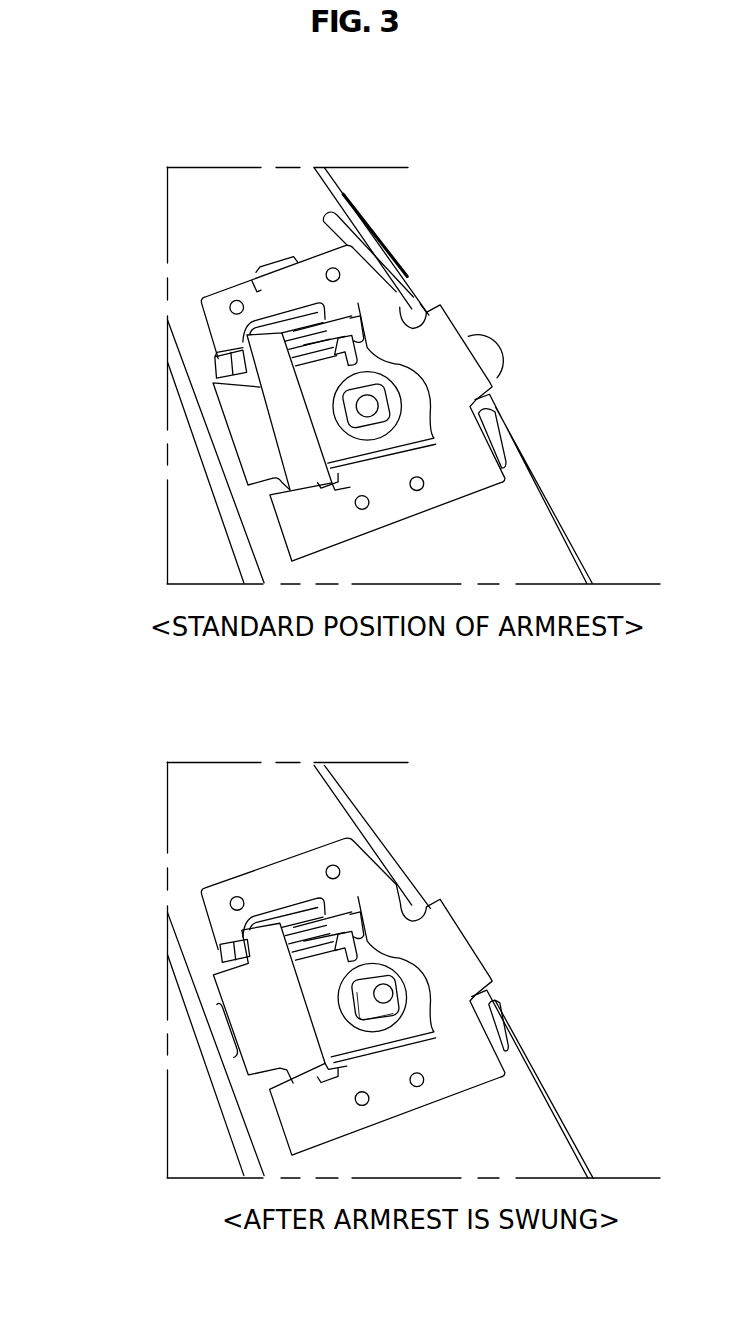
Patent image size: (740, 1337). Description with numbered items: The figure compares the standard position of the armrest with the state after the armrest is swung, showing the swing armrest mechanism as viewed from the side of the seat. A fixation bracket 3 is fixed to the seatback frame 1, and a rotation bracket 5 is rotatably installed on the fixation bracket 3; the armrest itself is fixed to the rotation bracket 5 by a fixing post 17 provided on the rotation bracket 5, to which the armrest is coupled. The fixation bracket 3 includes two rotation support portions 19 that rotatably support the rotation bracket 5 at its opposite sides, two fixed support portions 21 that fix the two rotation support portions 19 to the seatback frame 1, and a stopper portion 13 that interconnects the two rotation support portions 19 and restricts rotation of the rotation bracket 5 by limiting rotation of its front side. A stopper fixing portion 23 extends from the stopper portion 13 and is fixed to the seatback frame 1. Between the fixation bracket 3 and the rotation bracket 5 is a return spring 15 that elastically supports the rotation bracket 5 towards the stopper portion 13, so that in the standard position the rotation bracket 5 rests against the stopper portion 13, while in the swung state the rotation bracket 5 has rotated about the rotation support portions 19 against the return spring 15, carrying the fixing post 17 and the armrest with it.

The seatback frame 1 is at (131, 222).
The fixation bracket 3 is at (64, 402).
The rotation bracket 5 is at (453, 376).
The stopper portion 13 is at (225, 406).
The return spring 15 is at (387, 683).
The fixing post 17 is at (441, 656).
The rotation support portions 19 is at (289, 455).
The fixed support portions 21 is at (283, 353).
The stopper fixing portion 23 is at (222, 400).